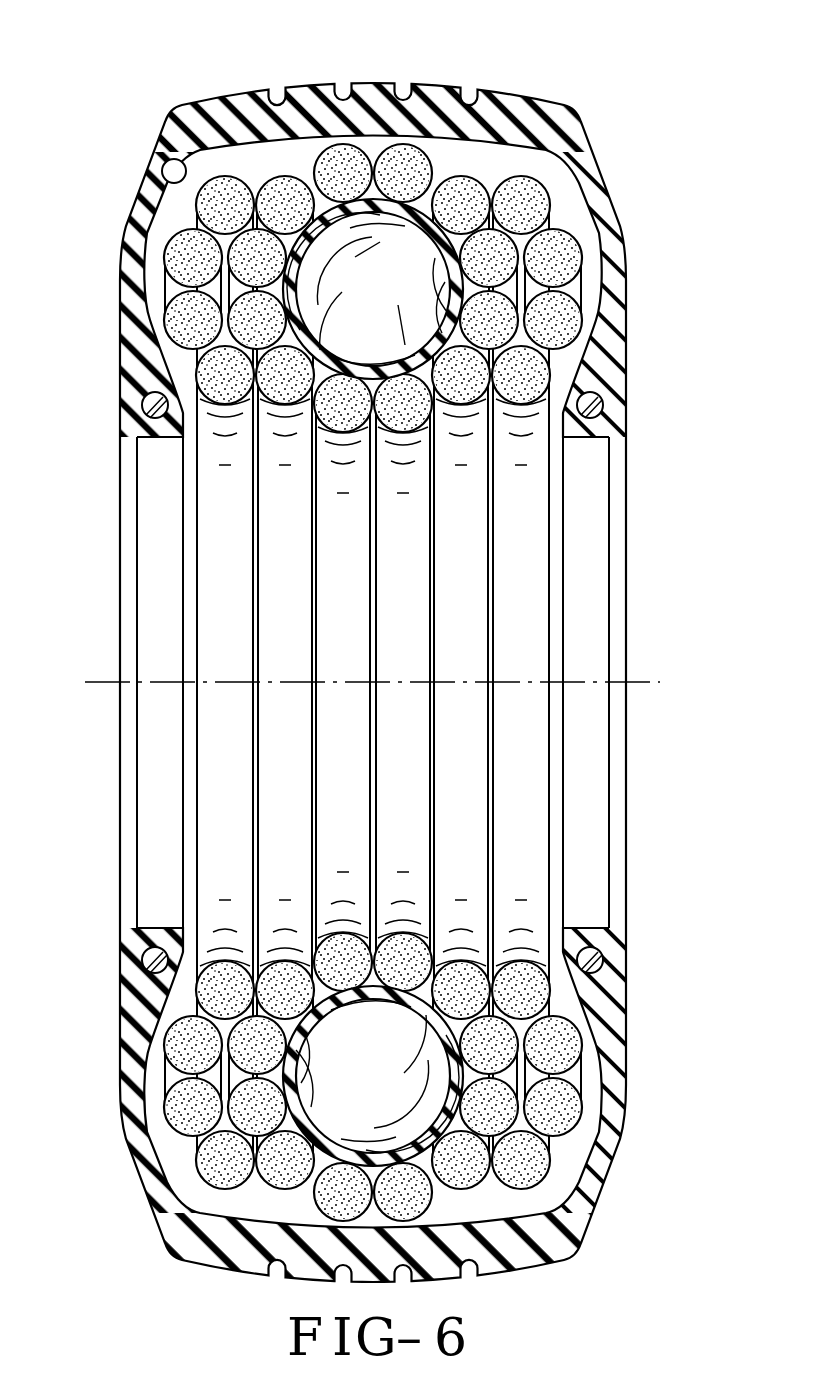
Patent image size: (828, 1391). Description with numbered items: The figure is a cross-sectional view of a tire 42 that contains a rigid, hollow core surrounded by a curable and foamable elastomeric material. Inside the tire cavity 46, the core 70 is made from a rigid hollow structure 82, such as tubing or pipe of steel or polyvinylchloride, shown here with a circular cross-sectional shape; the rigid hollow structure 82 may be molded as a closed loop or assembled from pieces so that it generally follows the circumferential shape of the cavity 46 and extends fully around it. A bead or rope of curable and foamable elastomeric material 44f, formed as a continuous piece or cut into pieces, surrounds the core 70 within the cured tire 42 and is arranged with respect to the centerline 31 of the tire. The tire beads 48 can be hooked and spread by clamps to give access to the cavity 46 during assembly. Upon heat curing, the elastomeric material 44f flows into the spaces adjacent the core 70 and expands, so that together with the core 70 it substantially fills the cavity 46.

The centerline 31 is at (570, 682).
The tire 42 is at (194, 85).
The bead or rope of curable and foamable elastomeric material 44f is at (190, 266).
The tire cavity 46 is at (166, 168).
The beads 48 is at (147, 400).
The core 70 is at (409, 347).
The rigid hollow structure 82 is at (340, 355).